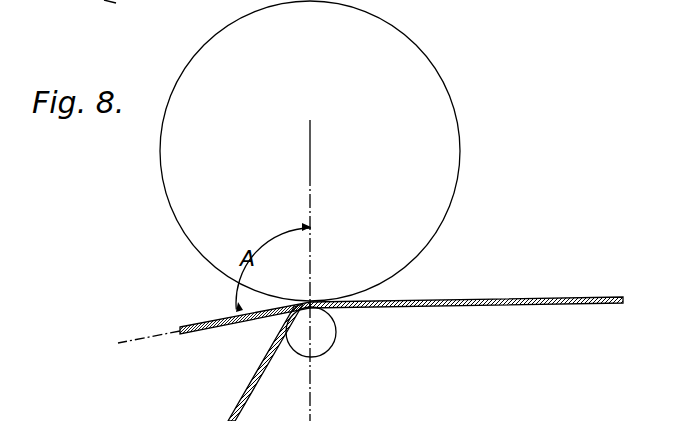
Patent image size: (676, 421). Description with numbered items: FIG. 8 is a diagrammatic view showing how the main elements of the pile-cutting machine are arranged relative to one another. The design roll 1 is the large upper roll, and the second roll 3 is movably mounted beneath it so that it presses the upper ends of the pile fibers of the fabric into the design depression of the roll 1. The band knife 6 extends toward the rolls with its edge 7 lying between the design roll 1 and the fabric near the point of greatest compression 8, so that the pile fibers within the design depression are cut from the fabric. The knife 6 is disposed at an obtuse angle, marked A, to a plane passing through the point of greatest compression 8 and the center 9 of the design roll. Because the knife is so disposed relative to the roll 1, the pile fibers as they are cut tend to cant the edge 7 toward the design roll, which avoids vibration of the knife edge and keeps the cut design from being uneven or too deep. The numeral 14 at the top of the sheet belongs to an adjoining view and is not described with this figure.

The roll 1 is at (459, 143).
The second roll 3 is at (328, 342).
The band knife 6 is at (194, 323).
The edge 7 is at (306, 302).
The point of greatest compression 8 is at (312, 303).
The center of the design roll 9 is at (310, 150).
The element of adjacent figure 14 is at (122, 8).